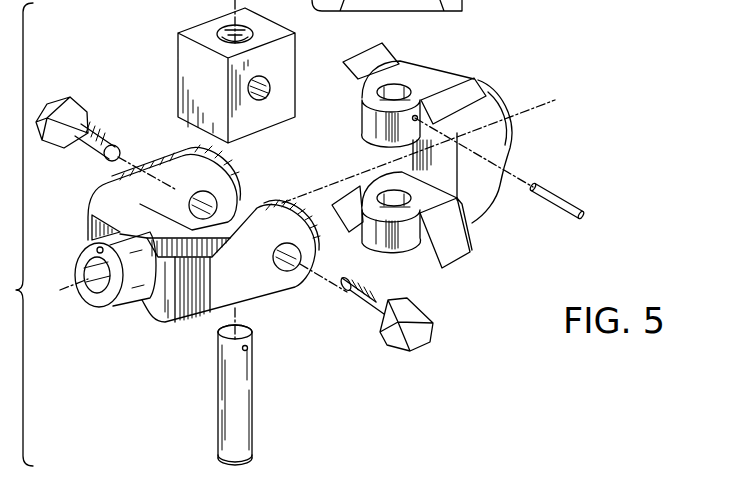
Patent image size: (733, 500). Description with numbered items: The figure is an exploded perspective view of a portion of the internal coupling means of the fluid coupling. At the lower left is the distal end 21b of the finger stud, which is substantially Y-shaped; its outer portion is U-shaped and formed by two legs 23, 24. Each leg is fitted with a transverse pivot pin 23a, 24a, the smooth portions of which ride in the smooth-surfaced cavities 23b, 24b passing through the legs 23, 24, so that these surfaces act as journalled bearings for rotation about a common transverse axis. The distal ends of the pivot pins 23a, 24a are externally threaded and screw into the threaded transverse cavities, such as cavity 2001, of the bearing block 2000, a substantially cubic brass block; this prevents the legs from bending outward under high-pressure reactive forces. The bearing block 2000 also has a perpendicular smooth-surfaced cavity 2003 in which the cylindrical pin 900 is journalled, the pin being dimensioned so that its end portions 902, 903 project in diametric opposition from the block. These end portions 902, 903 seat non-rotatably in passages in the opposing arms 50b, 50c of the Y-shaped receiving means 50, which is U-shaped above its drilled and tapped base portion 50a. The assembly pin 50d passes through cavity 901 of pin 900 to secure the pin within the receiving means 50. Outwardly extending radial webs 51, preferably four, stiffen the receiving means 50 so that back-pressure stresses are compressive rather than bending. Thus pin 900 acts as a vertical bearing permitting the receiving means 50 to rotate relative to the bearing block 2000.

The bearing block 2000 is at (190, 29).
The threaded cavity 2001 is at (260, 99).
The smooth-surfaced cavity 2003 is at (243, 32).
The transverse pivot pin 24a is at (62, 100).
The leg 24 is at (167, 157).
The cavity 24b is at (211, 195).
The distal end of finger stud 21b is at (103, 302).
The leg 23 is at (295, 284).
The cavity 23b is at (298, 255).
The transverse pivot pin 23a is at (415, 340).
The pin 900 is at (250, 400).
The cavity 901 is at (248, 348).
The end portion of pin 902 is at (225, 332).
The end portion of pin 903 is at (258, 463).
The Y-shaped receiving means 50 is at (520, 126).
The base portion 50a is at (508, 102).
The arm 50b is at (420, 77).
The arm 50c is at (398, 250).
The assembly pin 50d is at (572, 204).
The radial web 51 is at (352, 80).